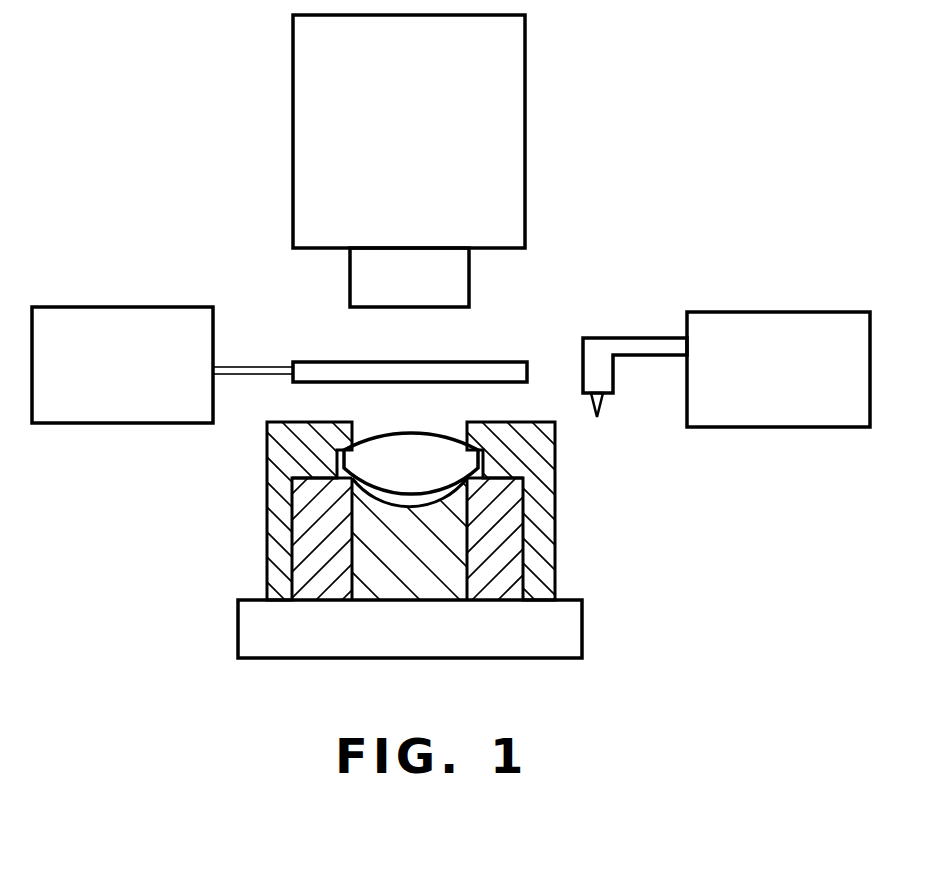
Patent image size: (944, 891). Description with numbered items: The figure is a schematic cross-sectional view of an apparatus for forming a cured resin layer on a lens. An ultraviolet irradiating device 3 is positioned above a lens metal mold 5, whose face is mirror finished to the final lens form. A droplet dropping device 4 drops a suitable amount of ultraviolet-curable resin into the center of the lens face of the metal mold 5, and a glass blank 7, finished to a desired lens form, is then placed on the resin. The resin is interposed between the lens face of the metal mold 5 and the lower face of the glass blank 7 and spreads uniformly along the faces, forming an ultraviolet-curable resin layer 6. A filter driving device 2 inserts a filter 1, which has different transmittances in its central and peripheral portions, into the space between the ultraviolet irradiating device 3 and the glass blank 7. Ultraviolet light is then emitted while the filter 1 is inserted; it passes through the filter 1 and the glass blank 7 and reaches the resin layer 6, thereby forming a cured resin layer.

The filter 1 is at (493, 361).
The filter driving device 2 is at (135, 306).
The ultraviolet irradiating device 3 is at (527, 124).
The droplet dropping device 4 is at (596, 358).
The lens metal mold 5 is at (358, 546).
The ultraviolet-curable resin layer 6 is at (437, 500).
The glass blank 7 is at (413, 432).